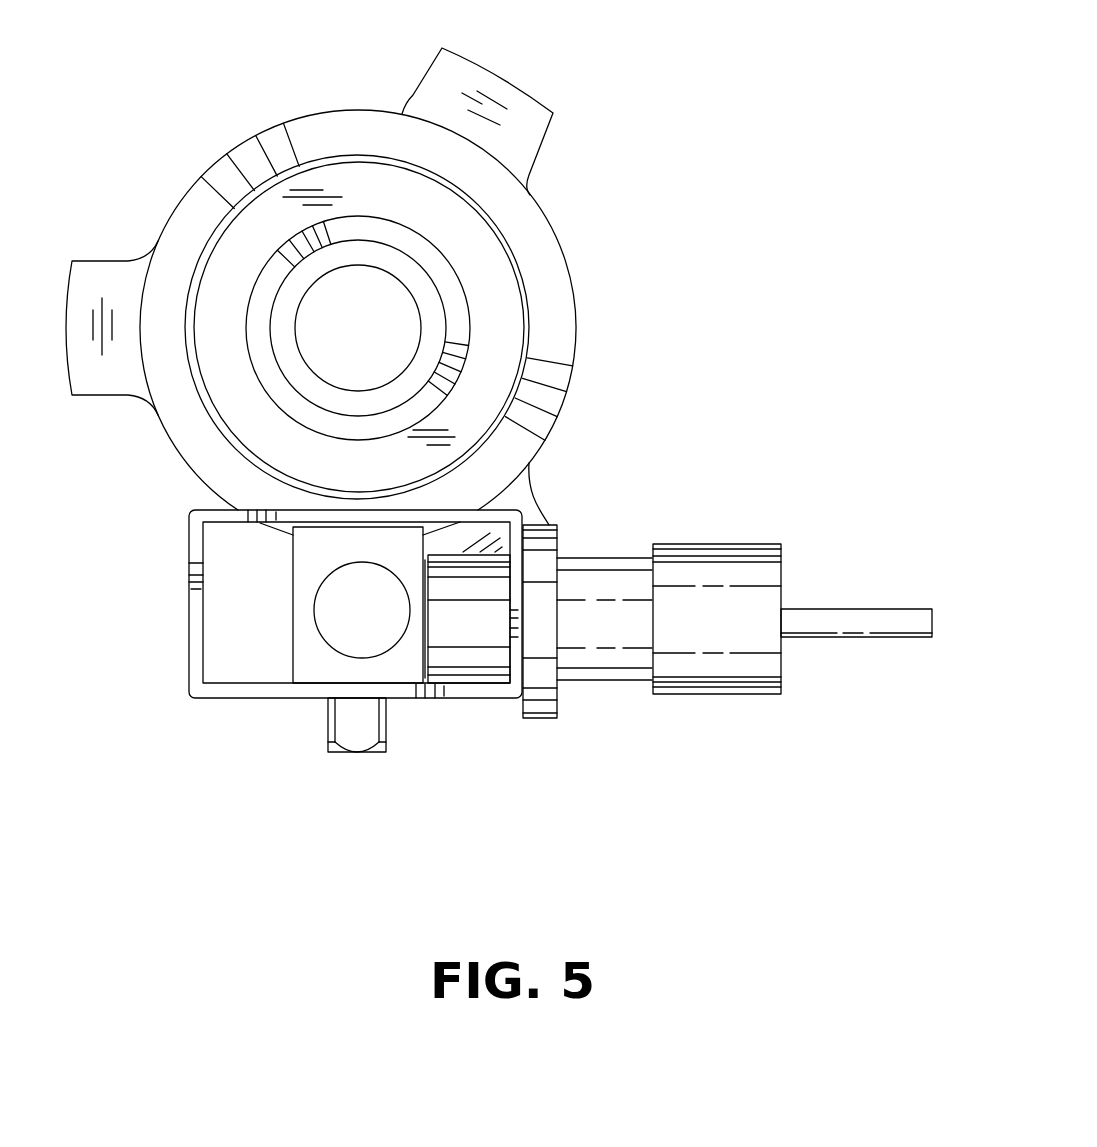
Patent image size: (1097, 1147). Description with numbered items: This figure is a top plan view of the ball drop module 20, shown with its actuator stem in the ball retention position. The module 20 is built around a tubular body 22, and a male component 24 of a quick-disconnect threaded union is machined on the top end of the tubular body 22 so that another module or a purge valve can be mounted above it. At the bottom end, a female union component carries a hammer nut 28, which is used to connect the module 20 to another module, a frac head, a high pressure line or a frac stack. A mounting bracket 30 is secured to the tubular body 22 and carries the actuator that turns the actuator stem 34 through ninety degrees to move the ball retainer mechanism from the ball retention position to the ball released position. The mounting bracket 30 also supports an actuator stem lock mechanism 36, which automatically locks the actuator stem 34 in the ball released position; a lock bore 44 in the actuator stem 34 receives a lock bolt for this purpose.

The ball drop module 20 is at (428, 286).
The tubular body 22 is at (562, 398).
The male component 24 is at (518, 278).
The hammer nut 28 is at (532, 115).
The mounting bracket 30 is at (272, 695).
The actuator stem 34 is at (358, 738).
The actuator stem lock mechanism 36 is at (685, 694).
The lock bore 44 is at (335, 593).